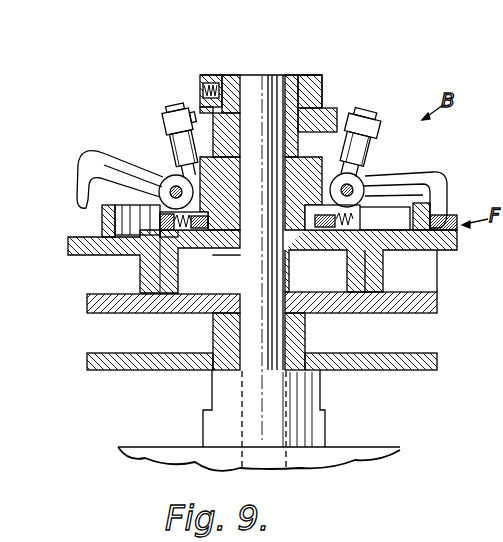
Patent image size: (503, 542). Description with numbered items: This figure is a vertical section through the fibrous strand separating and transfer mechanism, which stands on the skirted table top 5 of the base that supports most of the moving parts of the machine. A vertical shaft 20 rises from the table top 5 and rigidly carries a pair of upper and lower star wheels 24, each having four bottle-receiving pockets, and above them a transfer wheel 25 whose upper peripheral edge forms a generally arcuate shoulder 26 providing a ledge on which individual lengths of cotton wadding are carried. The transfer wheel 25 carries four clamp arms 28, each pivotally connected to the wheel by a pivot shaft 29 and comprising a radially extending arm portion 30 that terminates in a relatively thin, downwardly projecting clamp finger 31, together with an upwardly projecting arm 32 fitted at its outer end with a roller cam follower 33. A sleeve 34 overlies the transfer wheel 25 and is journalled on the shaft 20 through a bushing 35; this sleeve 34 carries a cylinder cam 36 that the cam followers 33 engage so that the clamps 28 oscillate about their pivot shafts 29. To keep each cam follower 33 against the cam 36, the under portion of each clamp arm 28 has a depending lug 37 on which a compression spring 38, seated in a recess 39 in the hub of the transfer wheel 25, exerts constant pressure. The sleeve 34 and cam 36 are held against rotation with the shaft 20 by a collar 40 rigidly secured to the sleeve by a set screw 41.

The skirted table top 5 is at (153, 448).
The shaft 20 is at (258, 76).
The star wheels 24 is at (437, 305).
The transfer wheel 25 is at (93, 249).
The arcuate shoulder 26 is at (102, 222).
The clamp arm 28 is at (251, 176).
The pivot shaft 29 is at (168, 180).
The radially extending arm portion 30 is at (105, 158).
The clamp finger 31 is at (78, 205).
The upwardly projecting arm 32 is at (180, 135).
The roller cam follower 33 is at (197, 118).
The sleeve 34 is at (297, 75).
The bushing 35 is at (241, 75).
The cylinder cam 36 is at (332, 112).
The depending lug 37 is at (368, 222).
The compression spring 38 is at (186, 234).
The recess 39 is at (192, 232).
The collar 40 is at (320, 82).
The set screw 41 is at (201, 86).